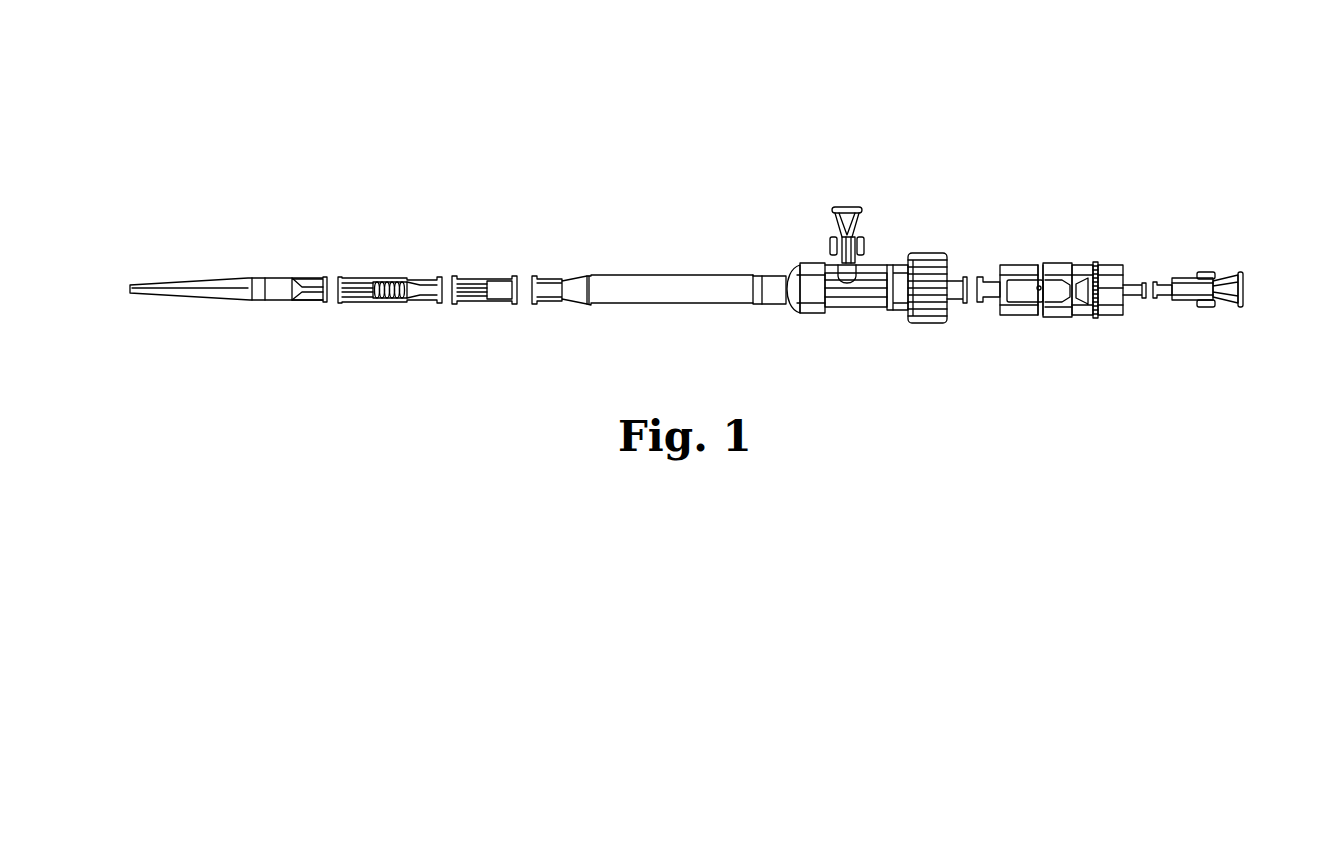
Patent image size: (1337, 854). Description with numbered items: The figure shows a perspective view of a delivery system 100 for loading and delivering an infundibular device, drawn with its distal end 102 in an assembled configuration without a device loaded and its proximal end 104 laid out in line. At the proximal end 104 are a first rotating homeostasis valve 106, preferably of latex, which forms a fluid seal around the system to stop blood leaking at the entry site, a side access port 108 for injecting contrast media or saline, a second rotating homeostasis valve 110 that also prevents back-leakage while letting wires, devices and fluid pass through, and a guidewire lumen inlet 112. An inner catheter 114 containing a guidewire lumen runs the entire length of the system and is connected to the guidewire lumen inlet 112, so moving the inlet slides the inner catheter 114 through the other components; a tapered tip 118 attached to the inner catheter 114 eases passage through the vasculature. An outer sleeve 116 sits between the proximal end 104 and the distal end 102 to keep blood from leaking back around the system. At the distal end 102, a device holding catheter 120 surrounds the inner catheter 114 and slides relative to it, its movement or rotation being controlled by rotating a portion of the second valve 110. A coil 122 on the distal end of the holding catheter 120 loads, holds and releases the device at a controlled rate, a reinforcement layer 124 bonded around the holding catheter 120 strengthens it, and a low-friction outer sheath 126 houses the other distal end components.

The delivery system 100 is at (683, 100).
The distal end 102 is at (183, 192).
The proximal end 104 is at (1137, 188).
The first rotating homeostasis valve 106 is at (840, 292).
The side access port 108 is at (860, 227).
The second rotating homeostasis valve 110 is at (1020, 287).
The guidewire lumen inlet 112 is at (1222, 282).
The inner catheter 114 is at (362, 284).
The outer sleeve 116 is at (695, 288).
The tapered tip 118 is at (227, 278).
The device holding catheter 120 is at (462, 286).
The coil 122 is at (380, 298).
The reinforcement layer 124 is at (497, 283).
The outer sheath 126 is at (312, 278).